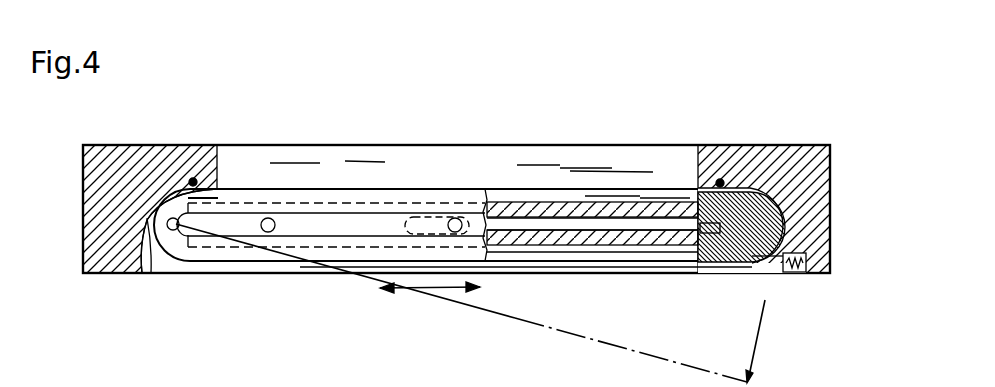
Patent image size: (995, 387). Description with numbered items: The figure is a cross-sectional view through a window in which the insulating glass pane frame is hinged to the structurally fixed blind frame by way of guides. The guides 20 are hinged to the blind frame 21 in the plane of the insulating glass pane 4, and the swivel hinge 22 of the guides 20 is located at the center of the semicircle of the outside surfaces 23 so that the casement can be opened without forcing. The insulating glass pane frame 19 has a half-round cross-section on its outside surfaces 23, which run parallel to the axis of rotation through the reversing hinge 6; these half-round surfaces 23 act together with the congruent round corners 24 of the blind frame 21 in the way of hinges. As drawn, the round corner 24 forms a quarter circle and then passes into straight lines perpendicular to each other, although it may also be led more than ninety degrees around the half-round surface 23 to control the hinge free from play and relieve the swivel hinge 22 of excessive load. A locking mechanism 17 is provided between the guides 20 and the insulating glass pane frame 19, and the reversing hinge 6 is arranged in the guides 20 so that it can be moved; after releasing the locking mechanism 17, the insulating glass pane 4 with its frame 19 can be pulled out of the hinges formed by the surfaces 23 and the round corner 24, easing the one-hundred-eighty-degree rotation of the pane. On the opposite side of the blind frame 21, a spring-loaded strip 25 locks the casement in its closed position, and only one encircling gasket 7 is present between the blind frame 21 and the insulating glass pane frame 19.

The insulating glass pane 4 is at (558, 225).
The reversing hinge 6 is at (455, 218).
The encircling gasket 7 is at (193, 178).
The locking mechanism 17 is at (267, 232).
The insulating glass pane frame 19 is at (218, 190).
The guides 20 is at (361, 222).
The blind frame 21 is at (118, 177).
The swivel hinge 22 is at (174, 231).
The outside surfaces 23 is at (142, 273).
The round corner 24 is at (152, 191).
The spring-loaded strip 25 is at (779, 258).